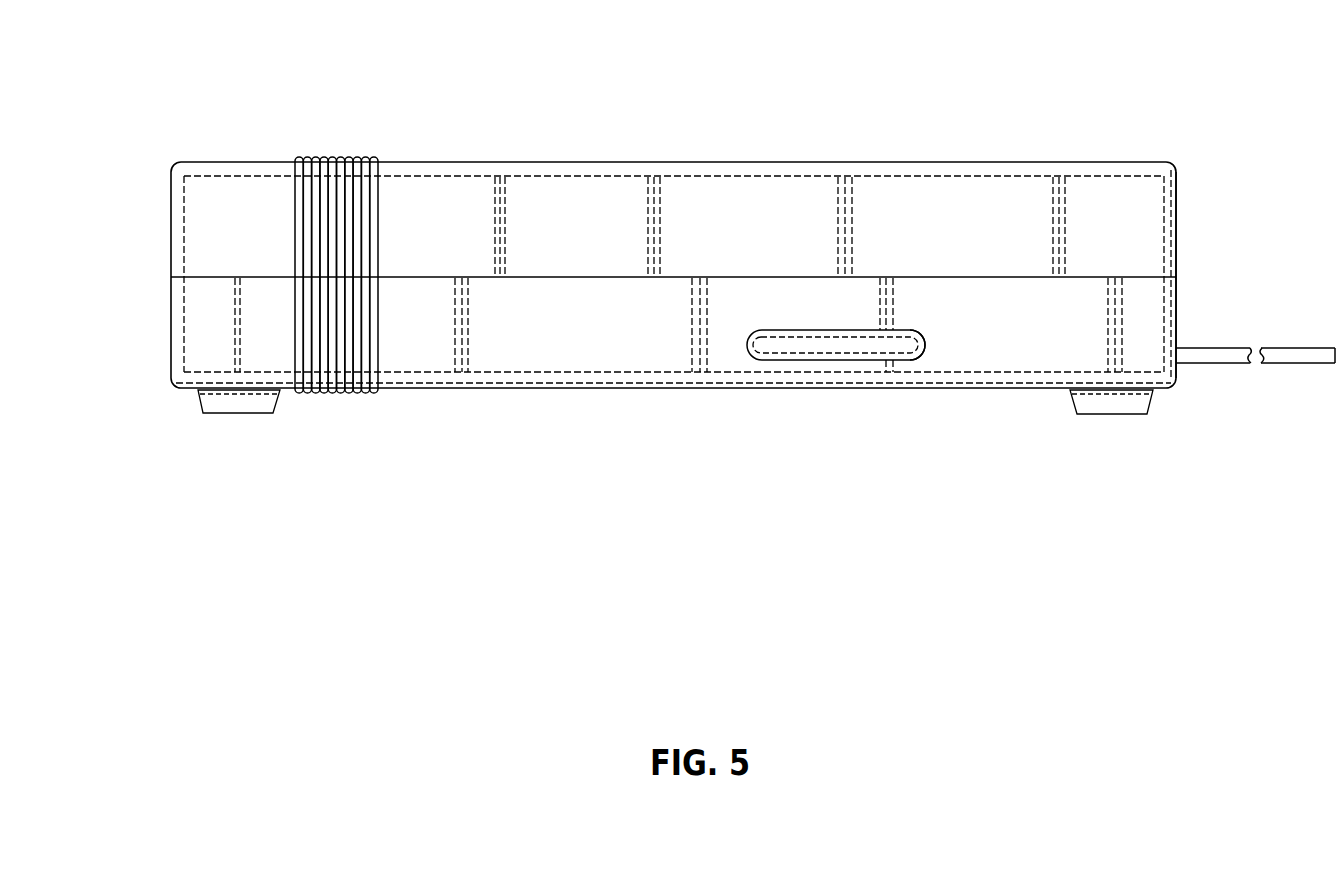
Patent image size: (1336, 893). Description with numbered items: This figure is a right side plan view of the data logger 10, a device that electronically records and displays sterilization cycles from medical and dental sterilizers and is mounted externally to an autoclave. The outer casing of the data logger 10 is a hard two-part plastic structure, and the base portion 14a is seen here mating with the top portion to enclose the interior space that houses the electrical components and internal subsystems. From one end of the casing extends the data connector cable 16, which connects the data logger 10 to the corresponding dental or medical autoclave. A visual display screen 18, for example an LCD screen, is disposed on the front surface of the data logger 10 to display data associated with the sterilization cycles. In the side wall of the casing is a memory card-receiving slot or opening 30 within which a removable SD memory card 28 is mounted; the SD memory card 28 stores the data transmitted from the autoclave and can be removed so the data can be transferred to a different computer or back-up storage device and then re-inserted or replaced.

The data logger 10 is at (950, 122).
The base portion 14a is at (1177, 217).
The data connector cable 16 is at (1292, 363).
The visual display screen 18 is at (165, 315).
The SD memory card 28 is at (833, 348).
The memory card-receiving slot 30 is at (925, 345).